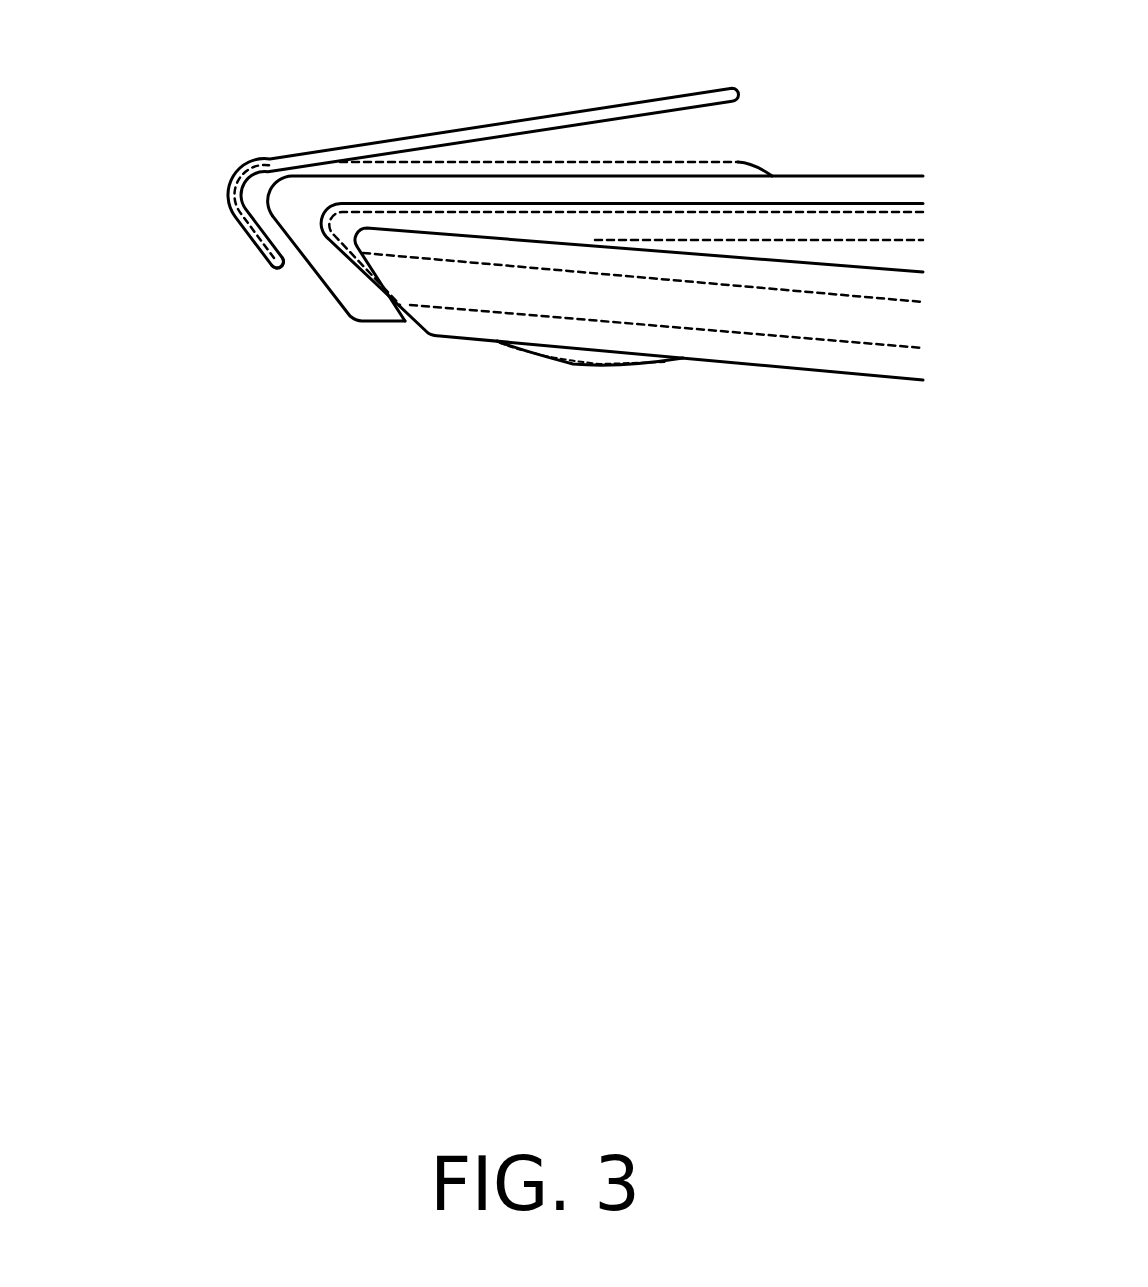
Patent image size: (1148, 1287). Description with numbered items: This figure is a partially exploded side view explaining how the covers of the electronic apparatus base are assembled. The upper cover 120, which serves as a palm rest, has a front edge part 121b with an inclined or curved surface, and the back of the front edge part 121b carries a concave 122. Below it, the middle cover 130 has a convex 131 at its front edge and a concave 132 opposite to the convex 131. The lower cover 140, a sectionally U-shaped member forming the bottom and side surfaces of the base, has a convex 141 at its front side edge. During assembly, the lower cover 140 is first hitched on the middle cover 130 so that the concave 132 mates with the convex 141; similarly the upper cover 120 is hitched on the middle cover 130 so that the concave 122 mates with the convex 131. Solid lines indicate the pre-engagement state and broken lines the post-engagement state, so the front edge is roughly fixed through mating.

The upper cover 120 is at (530, 117).
The front edge part 121b is at (235, 188).
The concave 122 is at (248, 201).
The middle cover 130 is at (828, 188).
The convex 131 is at (290, 202).
The concave 132 is at (328, 228).
The lower cover 140 is at (467, 323).
The convex 141 is at (385, 233).